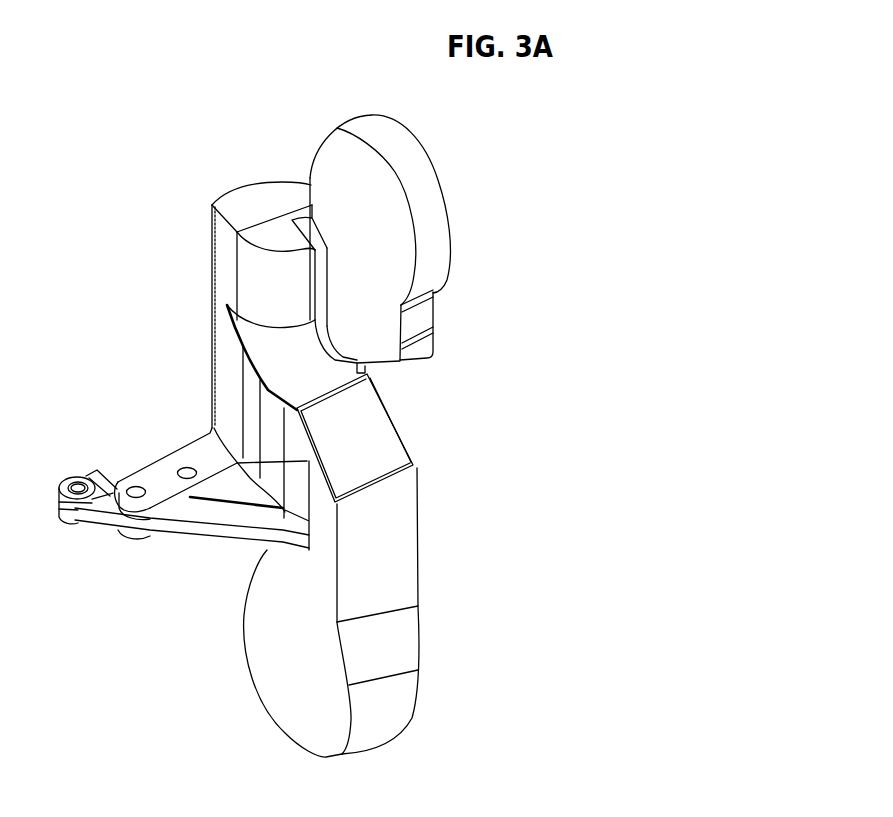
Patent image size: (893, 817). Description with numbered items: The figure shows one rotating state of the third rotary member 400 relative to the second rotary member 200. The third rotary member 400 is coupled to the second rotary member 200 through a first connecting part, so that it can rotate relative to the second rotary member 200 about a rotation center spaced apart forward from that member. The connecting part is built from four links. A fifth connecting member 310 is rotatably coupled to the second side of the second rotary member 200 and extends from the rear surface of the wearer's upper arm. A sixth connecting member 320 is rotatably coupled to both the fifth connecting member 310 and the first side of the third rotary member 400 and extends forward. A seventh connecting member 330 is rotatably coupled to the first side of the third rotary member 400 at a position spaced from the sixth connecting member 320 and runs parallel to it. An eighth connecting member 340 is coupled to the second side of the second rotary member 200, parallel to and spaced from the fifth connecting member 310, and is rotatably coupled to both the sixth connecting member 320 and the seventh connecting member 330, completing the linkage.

The second rotary member 200 is at (222, 268).
The fifth connecting member 310 is at (118, 474).
The sixth connecting member 320 is at (176, 525).
The seventh connecting member 330 is at (250, 490).
The eighth connecting member 340 is at (164, 478).
The third rotary member 400 is at (398, 647).